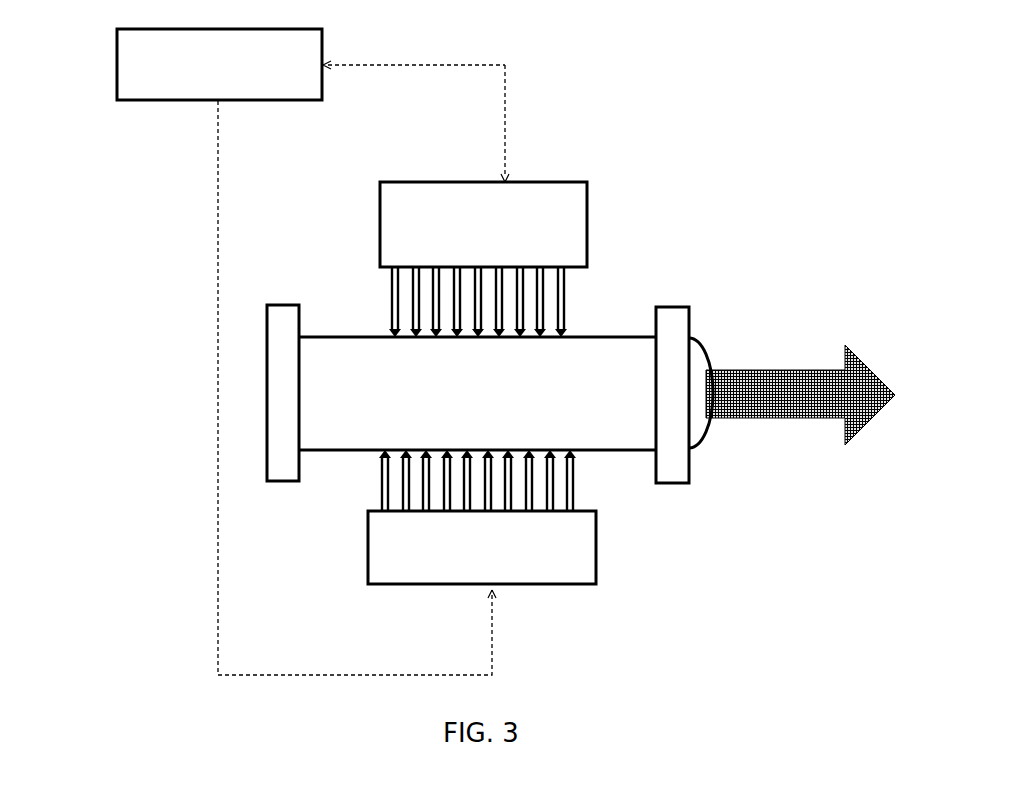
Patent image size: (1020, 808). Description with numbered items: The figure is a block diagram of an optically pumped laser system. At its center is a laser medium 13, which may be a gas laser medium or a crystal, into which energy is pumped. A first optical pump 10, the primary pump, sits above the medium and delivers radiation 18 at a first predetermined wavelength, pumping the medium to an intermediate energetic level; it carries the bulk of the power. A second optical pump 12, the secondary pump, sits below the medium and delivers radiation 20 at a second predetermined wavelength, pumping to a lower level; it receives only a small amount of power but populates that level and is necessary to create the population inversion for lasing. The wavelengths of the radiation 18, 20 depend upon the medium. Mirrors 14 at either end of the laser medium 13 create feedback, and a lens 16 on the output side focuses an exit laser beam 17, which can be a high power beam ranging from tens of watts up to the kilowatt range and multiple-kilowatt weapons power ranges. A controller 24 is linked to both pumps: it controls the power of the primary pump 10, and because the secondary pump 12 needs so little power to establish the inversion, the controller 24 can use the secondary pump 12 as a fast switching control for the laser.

The first optical pump 10 is at (379, 223).
The second optical pump 12 is at (368, 547).
The laser medium 13 is at (604, 337).
The mirrors 14 is at (283, 305).
The lens 16 is at (704, 437).
The exit laser beam 17 is at (777, 362).
The radiation 18 is at (376, 295).
The radiation 20 is at (356, 490).
The controller 24 is at (114, 80).